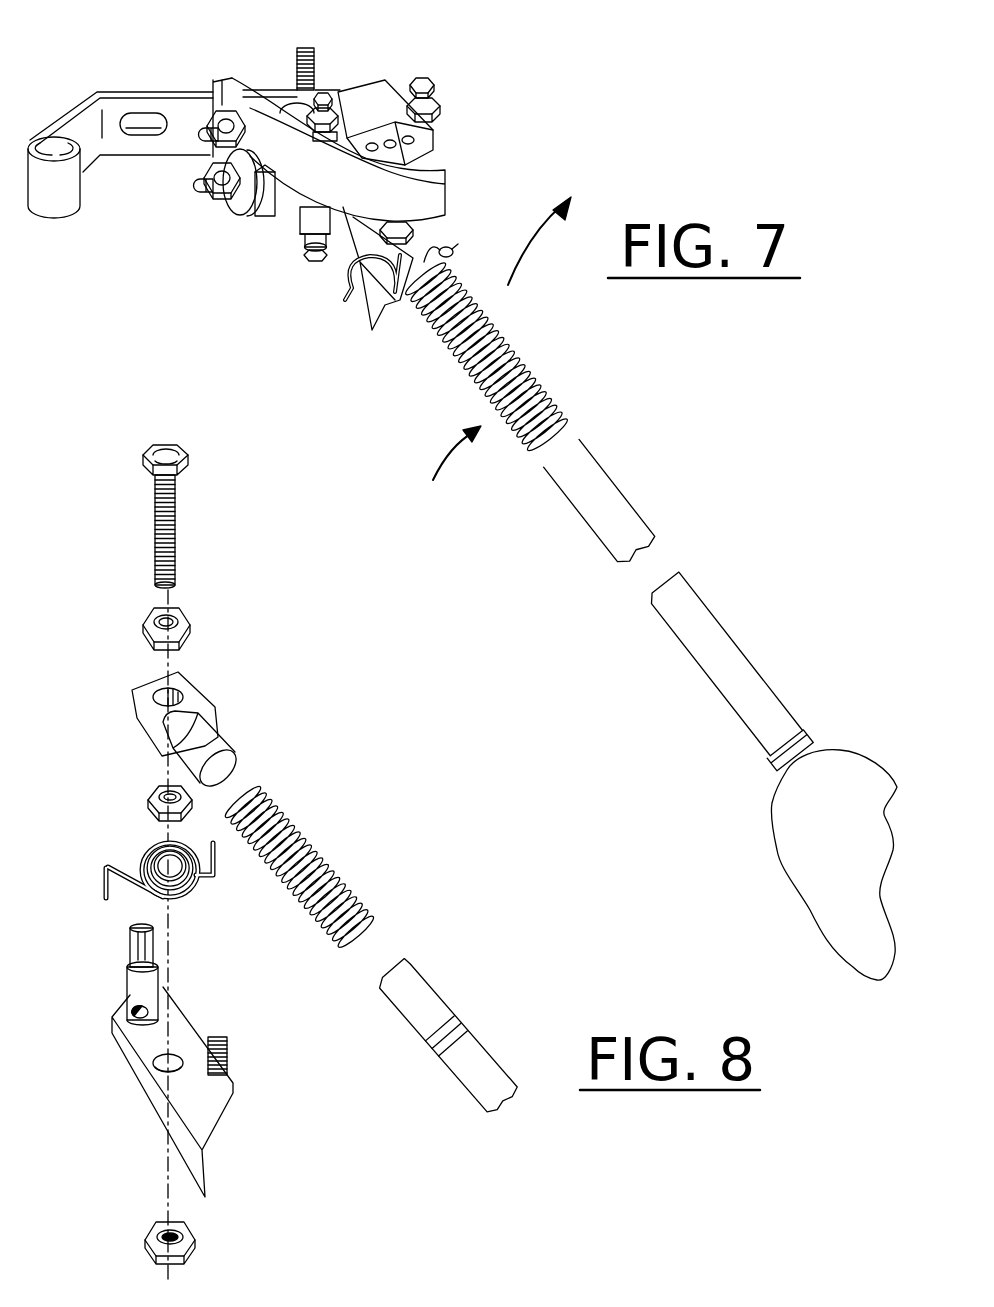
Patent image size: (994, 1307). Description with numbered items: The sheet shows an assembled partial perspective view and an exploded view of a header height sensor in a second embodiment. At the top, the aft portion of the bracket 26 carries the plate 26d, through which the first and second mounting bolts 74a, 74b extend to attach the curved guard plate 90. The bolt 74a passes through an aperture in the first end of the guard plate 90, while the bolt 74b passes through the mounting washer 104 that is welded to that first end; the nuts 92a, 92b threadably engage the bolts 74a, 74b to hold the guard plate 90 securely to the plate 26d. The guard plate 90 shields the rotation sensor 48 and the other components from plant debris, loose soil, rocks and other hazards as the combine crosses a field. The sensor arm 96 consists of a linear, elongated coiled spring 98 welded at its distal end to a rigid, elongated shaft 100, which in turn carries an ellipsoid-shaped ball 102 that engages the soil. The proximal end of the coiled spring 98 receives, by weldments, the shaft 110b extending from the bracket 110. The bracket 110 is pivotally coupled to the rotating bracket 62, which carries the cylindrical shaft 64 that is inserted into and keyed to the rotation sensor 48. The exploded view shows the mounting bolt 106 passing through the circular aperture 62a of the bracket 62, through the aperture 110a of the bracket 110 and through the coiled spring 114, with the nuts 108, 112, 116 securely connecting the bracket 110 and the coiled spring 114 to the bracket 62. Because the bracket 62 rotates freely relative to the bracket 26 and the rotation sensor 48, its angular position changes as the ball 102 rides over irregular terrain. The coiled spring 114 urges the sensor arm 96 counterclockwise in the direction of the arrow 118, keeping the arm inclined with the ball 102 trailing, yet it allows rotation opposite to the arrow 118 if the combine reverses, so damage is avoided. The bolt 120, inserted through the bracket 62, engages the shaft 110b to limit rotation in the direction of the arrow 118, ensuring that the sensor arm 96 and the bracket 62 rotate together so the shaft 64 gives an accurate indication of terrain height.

In FIG. 7, the bracket 26 is at (110, 86).
In FIG. 7, the plate 26d is at (244, 88).
In FIG. 7, the rotation sensor 48 is at (363, 100).
In FIG. 8, the bracket 62 is at (141, 1092).
In FIG. 8, the circular aperture 62a is at (165, 1074).
In FIG. 8, the shaft 64 is at (140, 987).
In FIG. 7, the first mounting bolt 74a is at (207, 136).
In FIG. 7, the second mounting bolt 74b is at (203, 187).
In FIG. 7, the guard plate 90 is at (433, 200).
In FIG. 7, the nut 92a is at (224, 110).
In FIG. 7, the nut 92b is at (226, 205).
In FIG. 7, the sensor arm 96 is at (451, 466).
In FIG. 7, the coiled spring 98 is at (547, 393).
In FIG. 8, the coiled spring 98 is at (328, 878).
In FIG. 7, the shaft 100 is at (617, 510).
In FIG. 8, the shaft 100 is at (457, 1042).
In FIG. 7, the ball 102 is at (787, 833).
In FIG. 7, the mounting washer 104 is at (248, 212).
In FIG. 8, the mounting bolt 106 is at (175, 527).
In FIG. 8, the nut 108 is at (183, 612).
In FIG. 8, the bracket 110 is at (202, 727).
In FIG. 8, the aperture 110a is at (150, 681).
In FIG. 8, the shaft 110b is at (207, 742).
In FIG. 8, the nut 112 is at (157, 786).
In FIG. 8, the coiled spring 114 is at (148, 848).
In FIG. 8, the nut 116 is at (192, 1240).
In FIG. 7, the arrow 118 is at (533, 266).
In FIG. 7, the bolt 120 is at (444, 258).
In FIG. 8, the bolt 120 is at (227, 1057).